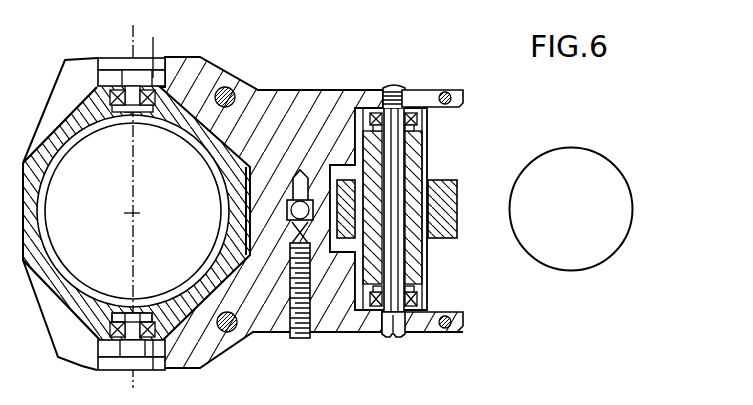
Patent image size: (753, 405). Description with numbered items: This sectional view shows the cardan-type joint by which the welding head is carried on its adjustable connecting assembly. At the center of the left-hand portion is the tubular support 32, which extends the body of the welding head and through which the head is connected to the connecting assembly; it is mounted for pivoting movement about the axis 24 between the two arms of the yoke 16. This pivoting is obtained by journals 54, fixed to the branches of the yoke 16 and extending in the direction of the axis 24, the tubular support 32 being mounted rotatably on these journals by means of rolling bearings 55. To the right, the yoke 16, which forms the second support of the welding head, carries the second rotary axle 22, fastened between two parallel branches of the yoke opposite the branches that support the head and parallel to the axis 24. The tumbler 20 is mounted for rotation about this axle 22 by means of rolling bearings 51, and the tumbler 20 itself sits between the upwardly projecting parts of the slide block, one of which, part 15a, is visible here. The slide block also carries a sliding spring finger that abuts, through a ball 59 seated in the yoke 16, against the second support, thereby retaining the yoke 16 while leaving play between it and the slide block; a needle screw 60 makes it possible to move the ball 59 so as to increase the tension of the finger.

The upwardly projecting part 15a is at (446, 187).
The yoke 16 is at (339, 322).
The tumbler 20 is at (416, 142).
The axle 22 is at (393, 266).
The axis 24 is at (136, 212).
The tubular support 32 is at (93, 232).
The rolling bearings 51 is at (413, 106).
The journals 54 is at (128, 78).
The rolling bearings 55 is at (145, 312).
The ball 59 is at (288, 210).
The needle screw 60 is at (300, 340).